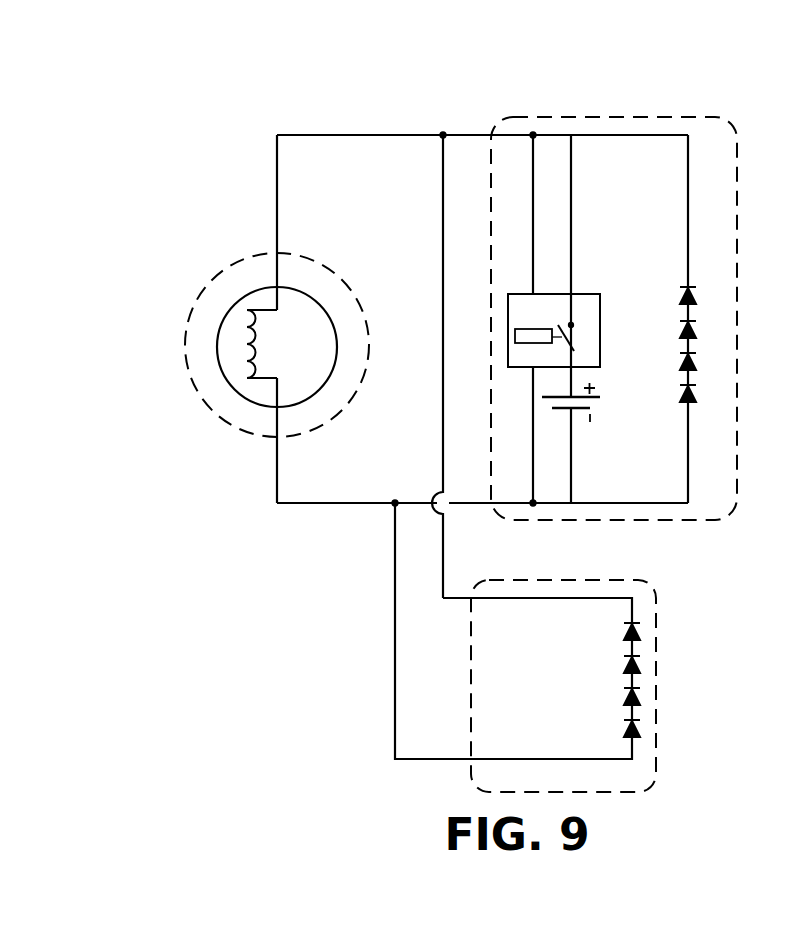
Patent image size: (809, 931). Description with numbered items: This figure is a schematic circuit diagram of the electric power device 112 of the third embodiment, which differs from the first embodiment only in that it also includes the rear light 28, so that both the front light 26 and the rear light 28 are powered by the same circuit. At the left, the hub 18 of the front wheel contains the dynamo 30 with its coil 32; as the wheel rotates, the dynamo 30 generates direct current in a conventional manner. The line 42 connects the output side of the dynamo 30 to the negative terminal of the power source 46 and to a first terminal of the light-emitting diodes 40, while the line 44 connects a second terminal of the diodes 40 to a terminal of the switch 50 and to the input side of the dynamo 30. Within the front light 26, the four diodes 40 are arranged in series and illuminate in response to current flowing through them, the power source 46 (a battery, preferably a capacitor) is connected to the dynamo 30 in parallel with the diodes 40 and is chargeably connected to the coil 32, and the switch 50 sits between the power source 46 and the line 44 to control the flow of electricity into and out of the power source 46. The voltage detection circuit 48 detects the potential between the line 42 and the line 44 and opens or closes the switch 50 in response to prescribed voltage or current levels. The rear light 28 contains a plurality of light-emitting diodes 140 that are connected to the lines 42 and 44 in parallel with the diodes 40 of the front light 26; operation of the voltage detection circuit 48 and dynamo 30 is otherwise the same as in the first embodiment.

The electric power device 112 is at (480, 52).
The line 44 is at (332, 135).
The line 42 is at (357, 503).
The hub 18 is at (236, 268).
The dynamo 30 is at (315, 393).
The coil 32 is at (256, 362).
The front light 26 is at (678, 118).
The voltage detection circuit 48 is at (535, 333).
The switch 50 is at (574, 338).
The power source 46 is at (576, 408).
The light-emitting diodes 40 is at (696, 333).
The rear light 28 is at (655, 582).
The light-emitting diodes 140 is at (640, 670).